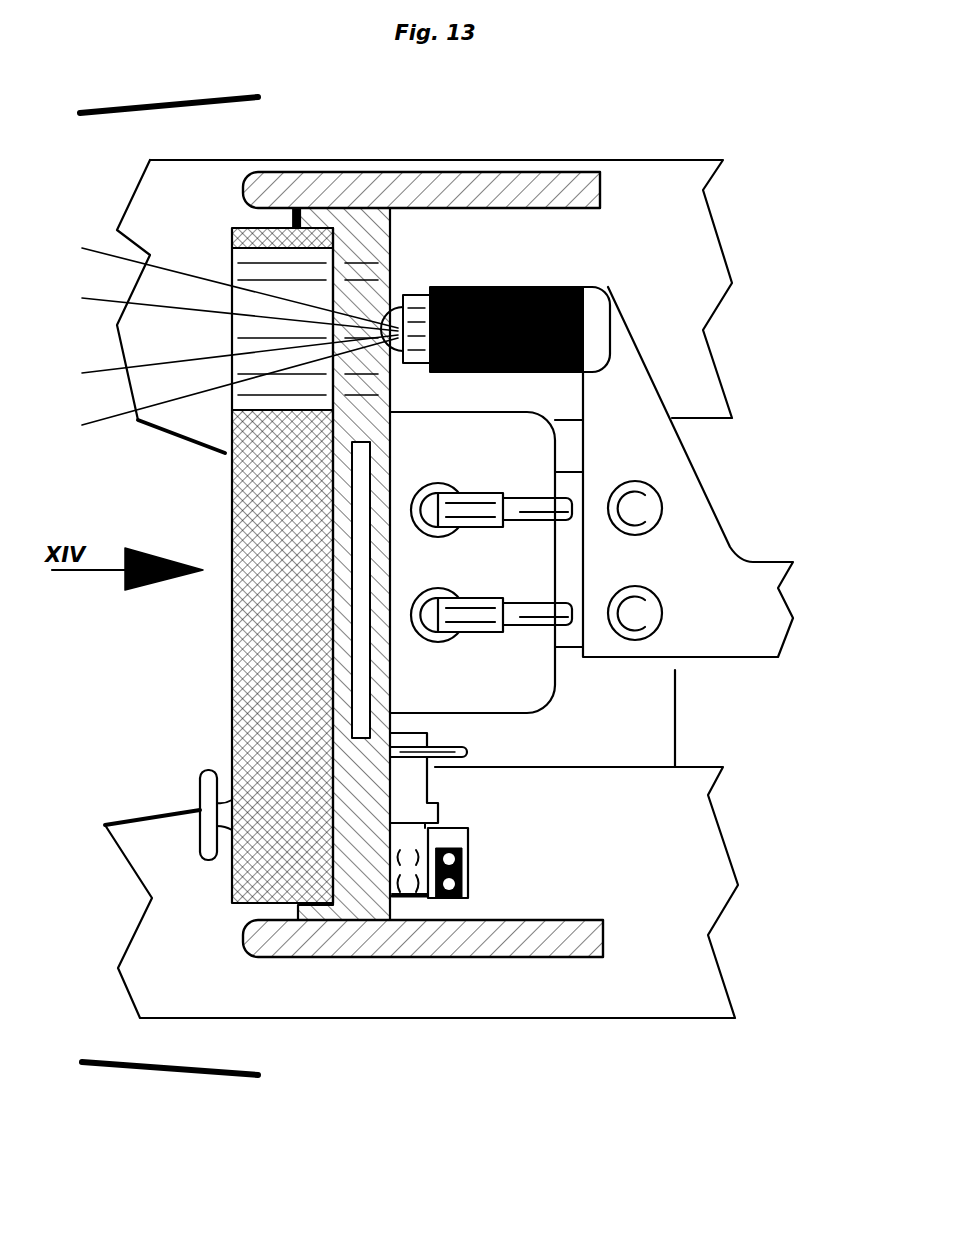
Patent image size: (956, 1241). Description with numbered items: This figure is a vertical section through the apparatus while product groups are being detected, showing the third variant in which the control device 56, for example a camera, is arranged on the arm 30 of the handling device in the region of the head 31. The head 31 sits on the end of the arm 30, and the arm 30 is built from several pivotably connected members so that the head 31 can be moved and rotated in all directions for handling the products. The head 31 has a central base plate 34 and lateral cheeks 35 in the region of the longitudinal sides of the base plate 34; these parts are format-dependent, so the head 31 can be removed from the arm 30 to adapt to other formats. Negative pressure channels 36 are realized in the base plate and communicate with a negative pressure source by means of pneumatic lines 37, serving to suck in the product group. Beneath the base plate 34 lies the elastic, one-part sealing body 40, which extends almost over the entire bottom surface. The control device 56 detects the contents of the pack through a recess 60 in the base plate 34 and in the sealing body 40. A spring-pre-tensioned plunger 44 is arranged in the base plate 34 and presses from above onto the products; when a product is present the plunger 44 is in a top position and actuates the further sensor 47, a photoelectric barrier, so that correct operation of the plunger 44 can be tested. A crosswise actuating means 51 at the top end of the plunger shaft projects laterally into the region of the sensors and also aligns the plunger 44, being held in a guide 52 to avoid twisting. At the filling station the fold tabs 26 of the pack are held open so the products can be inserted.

The fold tabs 26 is at (185, 97).
The head 31 is at (462, 168).
The lateral cheeks 35 is at (278, 190).
The control device 56 is at (562, 287).
The recess 60 is at (297, 272).
The base plate 34 is at (372, 425).
The negative pressure channels 36 is at (360, 545).
The pneumatic lines 37 is at (543, 610).
The arm 30 is at (680, 540).
The sealing body 40 is at (268, 648).
The plunger 44 is at (198, 790).
The guide 52 is at (470, 752).
The crosswise actuating means 51 is at (410, 783).
The sensor 47 is at (460, 868).